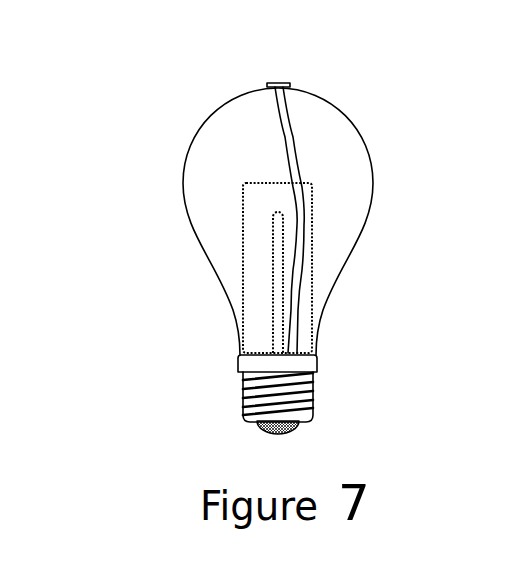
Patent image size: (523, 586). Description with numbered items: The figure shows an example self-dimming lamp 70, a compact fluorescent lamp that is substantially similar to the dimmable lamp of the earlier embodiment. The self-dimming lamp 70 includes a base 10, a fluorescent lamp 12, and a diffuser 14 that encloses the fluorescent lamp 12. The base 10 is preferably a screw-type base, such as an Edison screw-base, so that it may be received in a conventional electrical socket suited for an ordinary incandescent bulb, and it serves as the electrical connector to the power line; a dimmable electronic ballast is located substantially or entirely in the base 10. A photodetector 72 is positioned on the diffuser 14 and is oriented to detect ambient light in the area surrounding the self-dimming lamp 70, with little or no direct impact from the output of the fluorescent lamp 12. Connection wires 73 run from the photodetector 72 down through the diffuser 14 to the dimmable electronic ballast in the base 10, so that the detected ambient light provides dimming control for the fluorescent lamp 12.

The base 10 is at (240, 382).
The fluorescent lamp 12 is at (250, 310).
The diffuser 14 is at (198, 175).
The self-dimming lamp 70 is at (325, 62).
The photodetector 72 is at (277, 82).
The connection wires 73 is at (312, 134).